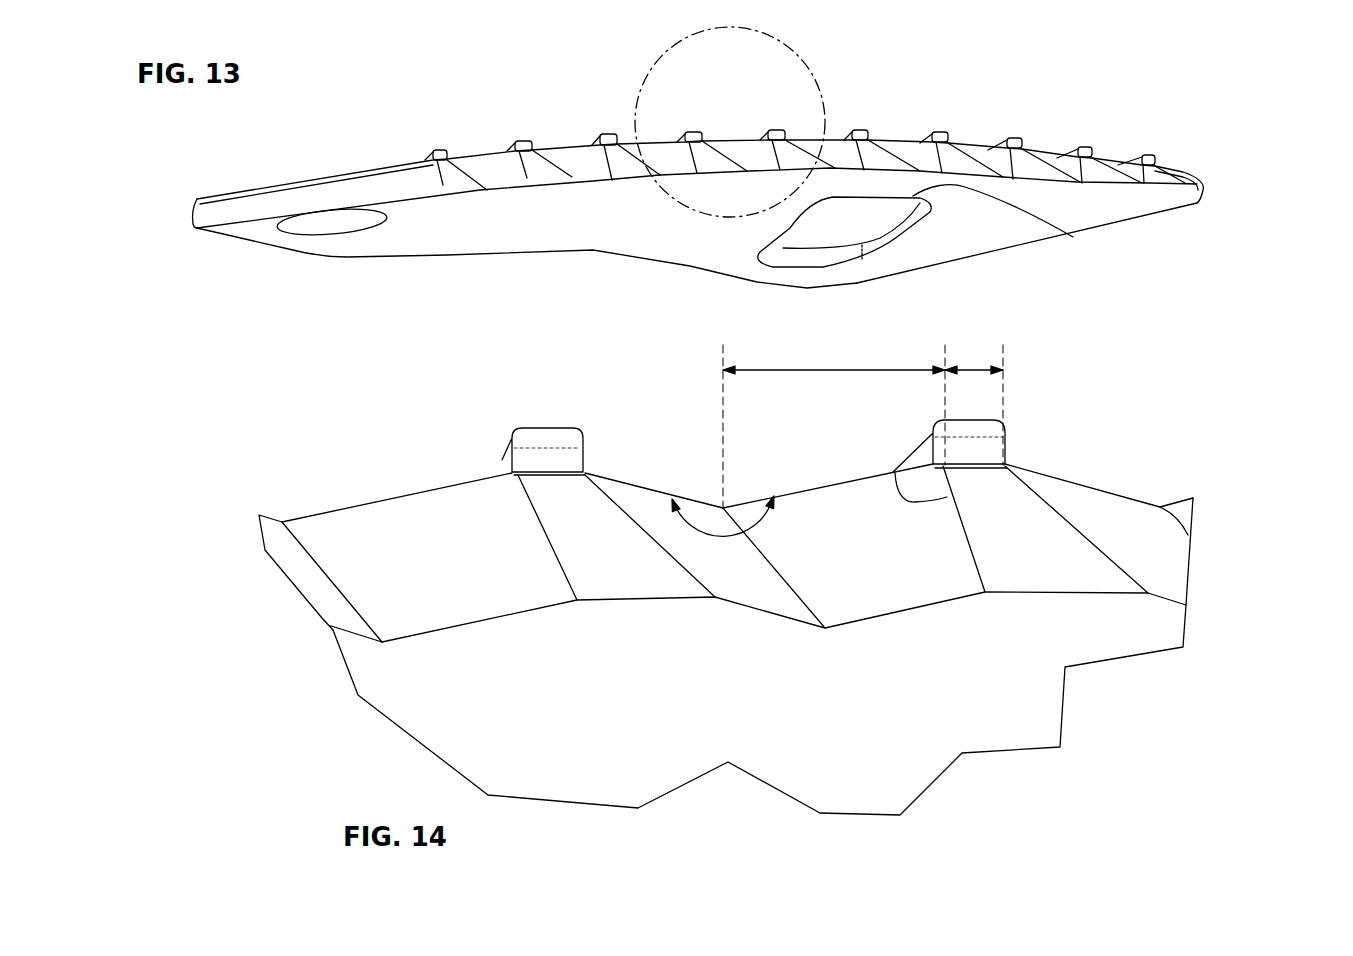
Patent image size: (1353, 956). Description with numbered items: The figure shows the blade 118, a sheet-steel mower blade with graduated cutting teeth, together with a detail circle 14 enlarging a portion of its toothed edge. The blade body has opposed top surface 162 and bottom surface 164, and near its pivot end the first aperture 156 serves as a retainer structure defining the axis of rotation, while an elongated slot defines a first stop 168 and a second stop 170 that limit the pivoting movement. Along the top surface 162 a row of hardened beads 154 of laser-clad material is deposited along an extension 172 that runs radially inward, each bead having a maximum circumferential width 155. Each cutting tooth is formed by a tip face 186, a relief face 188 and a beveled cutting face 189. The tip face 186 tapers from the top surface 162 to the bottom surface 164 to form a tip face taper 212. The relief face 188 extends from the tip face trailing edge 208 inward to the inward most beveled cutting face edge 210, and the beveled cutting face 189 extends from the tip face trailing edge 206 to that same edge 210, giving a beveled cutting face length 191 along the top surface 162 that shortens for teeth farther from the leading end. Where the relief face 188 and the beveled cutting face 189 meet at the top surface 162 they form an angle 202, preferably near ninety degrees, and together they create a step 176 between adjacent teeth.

In FIG. 13, the detail circle (FIG. 14 area) 14 is at (823, 98).
In FIG. 13, the blade 118 is at (1210, 227).
In FIG. 14, the hardened bead 154 is at (543, 428).
In FIG. 14, the maximum circumferential width 155 is at (973, 363).
In FIG. 13, the first aperture 156 is at (300, 237).
In FIG. 13, the top surface 162 is at (312, 175).
In FIG. 14, the top surface 162 is at (348, 507).
In FIG. 13, the bottom surface 164 is at (560, 217).
In FIG. 14, the bottom surface 164 is at (563, 780).
In FIG. 13, the first stop 168 is at (1073, 237).
In FIG. 13, the second stop 170 is at (833, 268).
In FIG. 13, the extension 172 is at (437, 153).
In FIG. 13, the step 176 is at (482, 140).
In FIG. 13, the tip face 186 is at (690, 133).
In FIG. 14, the tip face 186 is at (570, 542).
In FIG. 14, the relief face 188 is at (810, 508).
In FIG. 14, the beveled cutting face 189 is at (647, 512).
In FIG. 14, the beveled cutting face length 191 is at (887, 367).
In FIG. 14, the angle 202 is at (840, 492).
In FIG. 14, the tip face trailing edge 206 is at (602, 490).
In FIG. 14, the tip face trailing edge 208 is at (897, 467).
In FIG. 14, the inward most beveled cutting face edge 210 is at (728, 512).
In FIG. 14, the tip face taper 212 is at (1032, 580).